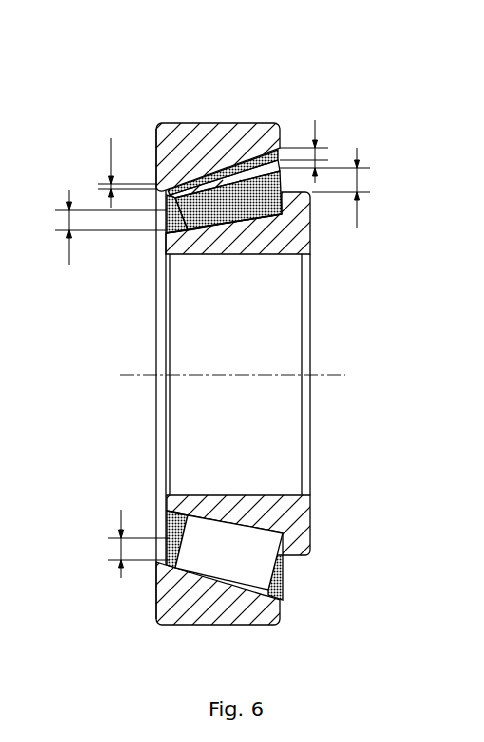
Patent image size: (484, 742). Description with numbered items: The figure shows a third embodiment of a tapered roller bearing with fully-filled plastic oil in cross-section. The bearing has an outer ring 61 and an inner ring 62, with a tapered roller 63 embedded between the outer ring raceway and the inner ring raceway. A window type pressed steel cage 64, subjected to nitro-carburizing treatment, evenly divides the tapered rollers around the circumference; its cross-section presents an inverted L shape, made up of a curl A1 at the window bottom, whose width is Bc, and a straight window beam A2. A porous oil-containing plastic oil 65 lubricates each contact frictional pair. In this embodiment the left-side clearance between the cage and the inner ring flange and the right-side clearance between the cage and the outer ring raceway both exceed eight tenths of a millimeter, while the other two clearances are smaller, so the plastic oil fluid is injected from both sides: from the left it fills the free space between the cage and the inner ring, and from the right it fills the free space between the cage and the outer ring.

The bearing outer ring 61 is at (250, 140).
The bearing inner ring 62 is at (288, 515).
The tapered roller 63 is at (250, 562).
The window type pressed steel cage 64 is at (282, 205).
The plastic oil 65 is at (266, 222).
The curl of the window bottom of the cage A1 is at (168, 193).
The window beam of the cage A2 is at (169, 208).
The width of the curl Bc is at (122, 510).